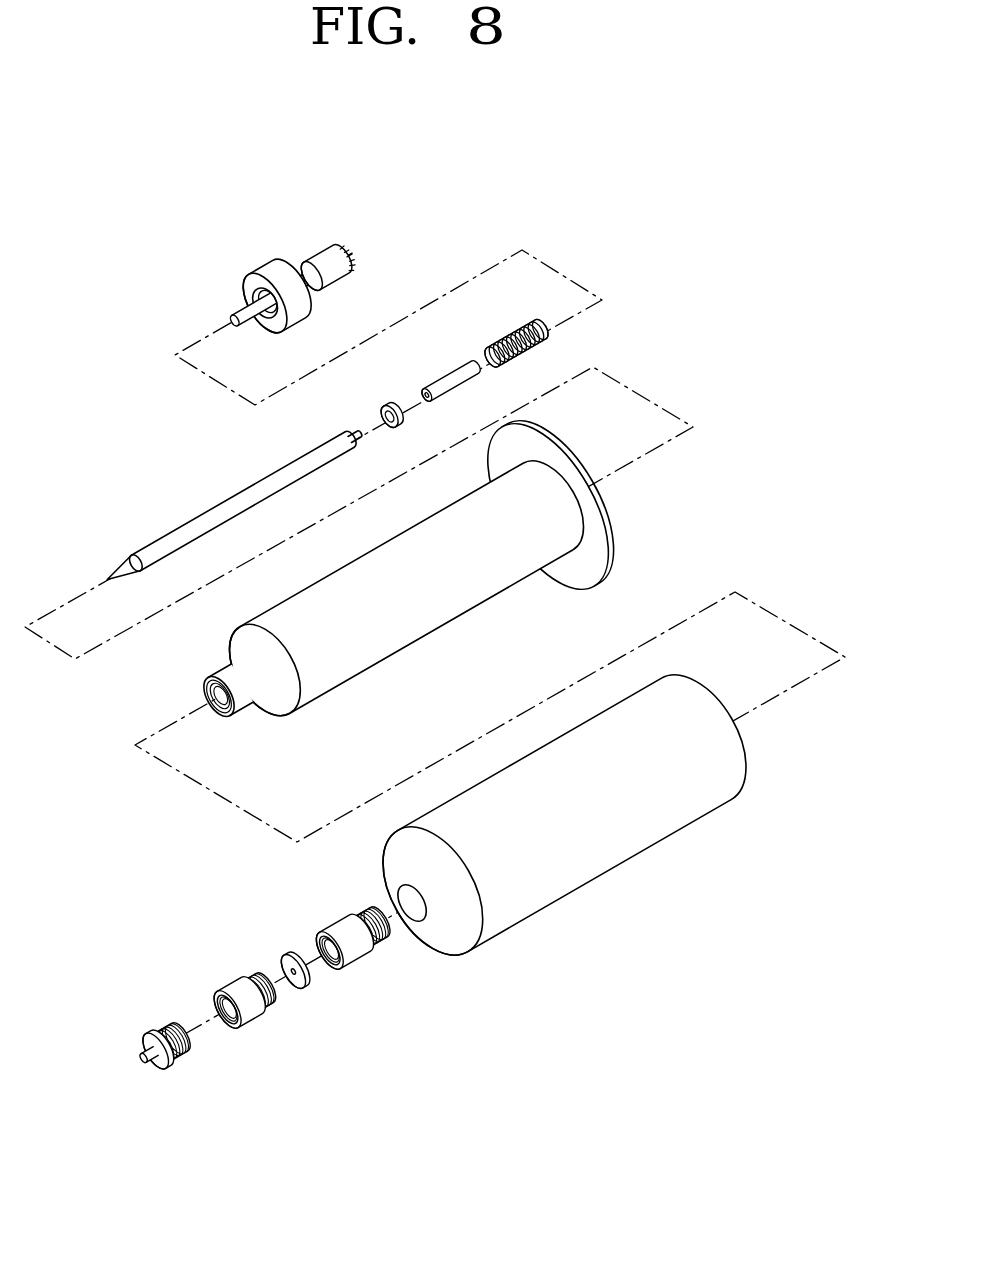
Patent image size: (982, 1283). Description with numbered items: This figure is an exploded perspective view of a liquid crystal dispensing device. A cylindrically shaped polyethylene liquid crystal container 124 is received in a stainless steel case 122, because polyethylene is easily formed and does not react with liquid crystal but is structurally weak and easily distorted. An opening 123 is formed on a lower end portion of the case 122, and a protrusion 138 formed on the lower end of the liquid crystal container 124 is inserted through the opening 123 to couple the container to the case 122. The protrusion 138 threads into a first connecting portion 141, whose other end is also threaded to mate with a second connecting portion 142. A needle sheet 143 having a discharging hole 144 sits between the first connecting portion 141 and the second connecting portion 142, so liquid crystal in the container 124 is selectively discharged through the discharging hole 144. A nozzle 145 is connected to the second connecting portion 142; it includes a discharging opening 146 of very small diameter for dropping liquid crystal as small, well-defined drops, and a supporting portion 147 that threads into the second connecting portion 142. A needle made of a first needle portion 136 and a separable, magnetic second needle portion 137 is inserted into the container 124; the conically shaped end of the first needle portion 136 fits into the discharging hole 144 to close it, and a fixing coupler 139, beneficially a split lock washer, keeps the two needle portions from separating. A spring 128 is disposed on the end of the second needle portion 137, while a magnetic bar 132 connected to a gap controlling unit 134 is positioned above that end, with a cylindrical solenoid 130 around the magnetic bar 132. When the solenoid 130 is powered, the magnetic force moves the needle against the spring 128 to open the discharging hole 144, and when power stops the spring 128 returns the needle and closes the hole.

The case 122 is at (605, 832).
The opening 123 is at (408, 906).
The liquid crystal container 124 is at (487, 573).
The spring 128 is at (502, 338).
The solenoid 130 is at (270, 283).
The magnetic bar 132 is at (243, 306).
The gap controlling unit 134 is at (325, 256).
The first needle portion 136 is at (235, 497).
The second needle portion 137 is at (450, 372).
The protrusion 138 is at (245, 693).
The fixing coupler 139 is at (388, 408).
The first connecting portion 141 is at (353, 950).
The second connecting portion 142 is at (247, 1013).
The needle sheet 143 is at (303, 973).
The discharging hole 144 is at (306, 998).
The nozzle 145 is at (156, 1046).
The discharging opening 146 is at (142, 1053).
The supporting portion 147 is at (172, 1062).